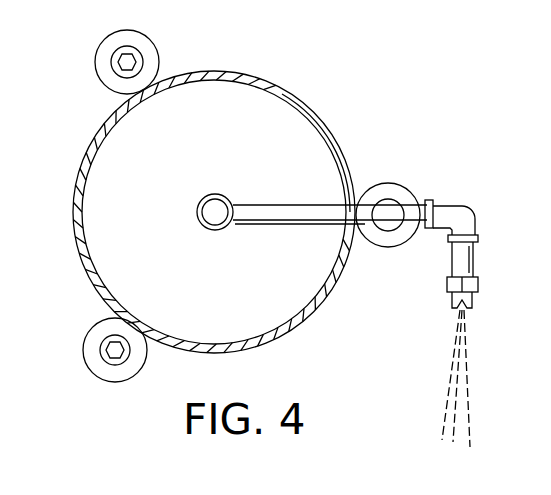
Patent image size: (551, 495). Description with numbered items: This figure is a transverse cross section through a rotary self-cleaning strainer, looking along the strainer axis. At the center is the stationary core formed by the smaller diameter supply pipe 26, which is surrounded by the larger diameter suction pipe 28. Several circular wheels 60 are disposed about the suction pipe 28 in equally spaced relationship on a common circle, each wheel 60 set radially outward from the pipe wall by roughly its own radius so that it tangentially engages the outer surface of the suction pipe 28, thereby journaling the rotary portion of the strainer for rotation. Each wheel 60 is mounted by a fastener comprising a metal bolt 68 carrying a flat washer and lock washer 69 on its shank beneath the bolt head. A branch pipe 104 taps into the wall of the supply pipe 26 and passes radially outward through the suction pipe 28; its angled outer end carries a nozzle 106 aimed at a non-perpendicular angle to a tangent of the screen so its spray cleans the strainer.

The supply pipe 26 is at (208, 195).
The suction pipe 28 is at (340, 143).
The wheel 60 is at (95, 62).
The bolt 68 is at (127, 62).
The washer 69 is at (114, 78).
The branch pipe 104 is at (297, 204).
The nozzle 106 is at (448, 298).